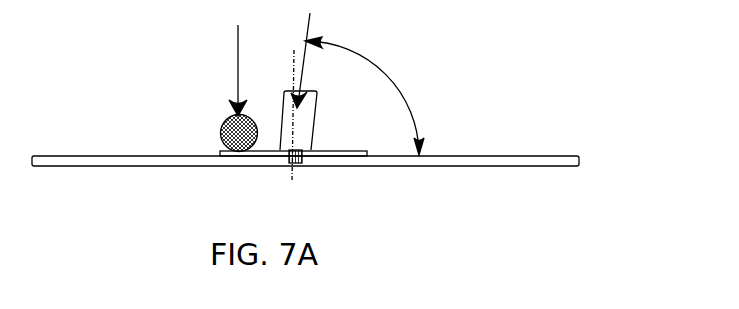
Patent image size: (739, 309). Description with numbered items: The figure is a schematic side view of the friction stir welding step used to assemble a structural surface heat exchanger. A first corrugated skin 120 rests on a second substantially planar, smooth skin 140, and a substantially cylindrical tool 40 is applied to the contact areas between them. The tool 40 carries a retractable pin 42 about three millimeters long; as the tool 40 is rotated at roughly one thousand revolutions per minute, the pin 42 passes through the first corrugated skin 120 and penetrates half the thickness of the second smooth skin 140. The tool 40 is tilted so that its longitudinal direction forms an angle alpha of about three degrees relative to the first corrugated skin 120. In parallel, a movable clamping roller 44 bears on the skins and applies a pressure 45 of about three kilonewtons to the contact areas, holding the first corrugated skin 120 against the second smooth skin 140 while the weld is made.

The tool 40 is at (314, 108).
The retractable pin 42 is at (310, 165).
The movable clamping roller 44 is at (219, 131).
The pressure 45 is at (235, 47).
The first corrugated skin 120 is at (333, 150).
The second substantially planar skin 140 is at (509, 155).
The angle alpha is at (392, 72).